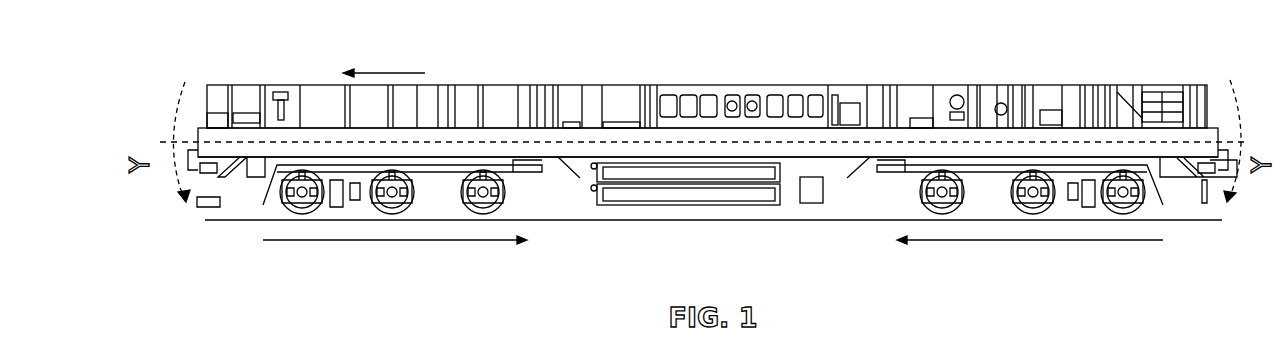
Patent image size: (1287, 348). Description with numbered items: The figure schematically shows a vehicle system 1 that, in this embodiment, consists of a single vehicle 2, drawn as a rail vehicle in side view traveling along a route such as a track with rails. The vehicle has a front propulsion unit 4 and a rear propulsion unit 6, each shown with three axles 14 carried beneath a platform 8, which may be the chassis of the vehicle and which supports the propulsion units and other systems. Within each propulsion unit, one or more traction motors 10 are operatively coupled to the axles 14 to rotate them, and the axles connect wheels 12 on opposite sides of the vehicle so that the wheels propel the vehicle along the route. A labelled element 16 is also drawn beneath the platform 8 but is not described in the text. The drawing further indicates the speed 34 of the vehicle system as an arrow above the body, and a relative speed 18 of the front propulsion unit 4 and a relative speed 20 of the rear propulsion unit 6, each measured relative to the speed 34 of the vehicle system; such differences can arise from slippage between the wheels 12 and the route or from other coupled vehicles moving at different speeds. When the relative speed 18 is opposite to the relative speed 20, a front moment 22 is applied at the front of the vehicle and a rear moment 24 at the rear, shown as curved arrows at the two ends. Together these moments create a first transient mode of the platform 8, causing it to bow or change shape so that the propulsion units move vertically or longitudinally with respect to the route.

The vehicle system 1 is at (702, 68).
The vehicle 2 is at (1002, 52).
The front propulsion unit 4 is at (537, 232).
The rear propulsion unit 6 is at (1174, 233).
The platform 8 is at (830, 148).
The traction motors 10 is at (1118, 210).
The wheels 12 is at (963, 208).
The axles 14 is at (1123, 197).
The fuel tank 16 is at (668, 206).
The relative speed of the front propulsion unit 18 is at (473, 247).
The relative speed of the rear propulsion unit 20 is at (1132, 243).
The front moment 22 is at (180, 177).
The rear moment 24 is at (1237, 112).
The speed of the vehicle system 34 is at (383, 73).